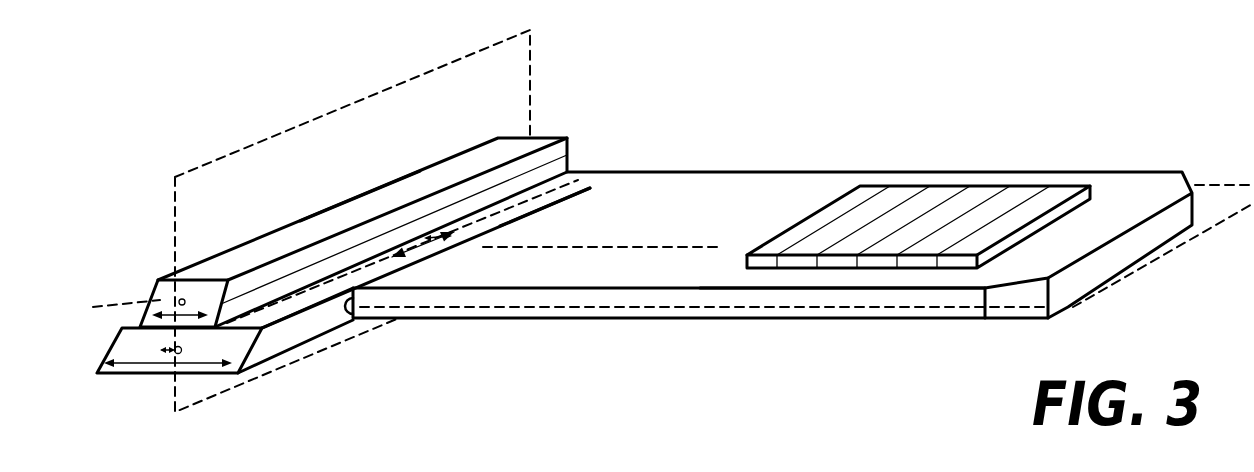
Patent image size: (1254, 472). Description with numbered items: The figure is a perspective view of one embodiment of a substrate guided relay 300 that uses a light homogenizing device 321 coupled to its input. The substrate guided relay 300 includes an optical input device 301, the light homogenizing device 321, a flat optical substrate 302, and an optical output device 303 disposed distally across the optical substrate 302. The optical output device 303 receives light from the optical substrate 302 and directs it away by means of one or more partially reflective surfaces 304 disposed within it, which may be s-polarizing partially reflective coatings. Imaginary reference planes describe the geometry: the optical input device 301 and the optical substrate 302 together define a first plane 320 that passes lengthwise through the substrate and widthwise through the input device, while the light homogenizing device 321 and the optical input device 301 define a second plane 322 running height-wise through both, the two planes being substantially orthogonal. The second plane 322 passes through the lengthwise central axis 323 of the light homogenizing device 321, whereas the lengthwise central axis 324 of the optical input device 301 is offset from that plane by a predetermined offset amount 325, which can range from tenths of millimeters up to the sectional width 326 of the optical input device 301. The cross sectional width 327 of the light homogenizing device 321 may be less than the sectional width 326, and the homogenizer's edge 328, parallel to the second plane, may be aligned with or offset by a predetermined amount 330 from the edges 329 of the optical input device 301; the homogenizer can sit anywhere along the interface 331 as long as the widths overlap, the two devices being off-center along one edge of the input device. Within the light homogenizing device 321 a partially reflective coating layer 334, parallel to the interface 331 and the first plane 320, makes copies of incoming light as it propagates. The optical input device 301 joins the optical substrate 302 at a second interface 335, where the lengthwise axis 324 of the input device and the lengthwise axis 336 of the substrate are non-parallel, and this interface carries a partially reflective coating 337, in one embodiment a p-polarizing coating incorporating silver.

The substrate guided relay 300 is at (128, 133).
The optical input device 301 is at (285, 352).
The optical substrate 302 is at (593, 320).
The optical output device 303 is at (838, 200).
The partially reflective surfaces 304 is at (820, 238).
The first plane 320 is at (797, 307).
The light homogenizing device 321 is at (242, 258).
The second plane 322 is at (310, 121).
The lengthwise central axis of the light homogenizing device 323 is at (200, 280).
The lengthwise central axis of the optical input device 324 is at (222, 356).
The offset amount 325 is at (162, 352).
The sectional width of the optical input device 326 is at (135, 372).
The cross sectional width of the light homogenizing device 327 is at (163, 305).
The edge of the light homogenizing device 328 is at (488, 183).
The edges of the optical input device 329 is at (300, 322).
The predetermined offset amount between edges 330 is at (437, 232).
The interface 331 is at (418, 252).
The partially reflective coating layer 334 is at (343, 247).
The second interface 335 is at (596, 188).
The lengthwise axis of the optical substrate 336 is at (633, 245).
The partially reflective coating 337 is at (357, 303).